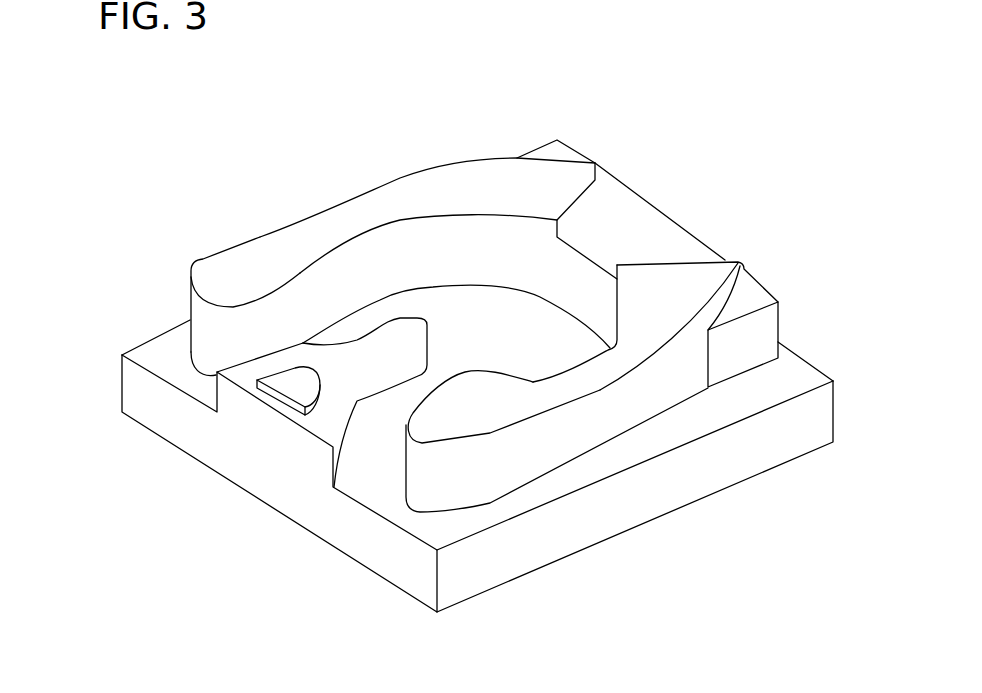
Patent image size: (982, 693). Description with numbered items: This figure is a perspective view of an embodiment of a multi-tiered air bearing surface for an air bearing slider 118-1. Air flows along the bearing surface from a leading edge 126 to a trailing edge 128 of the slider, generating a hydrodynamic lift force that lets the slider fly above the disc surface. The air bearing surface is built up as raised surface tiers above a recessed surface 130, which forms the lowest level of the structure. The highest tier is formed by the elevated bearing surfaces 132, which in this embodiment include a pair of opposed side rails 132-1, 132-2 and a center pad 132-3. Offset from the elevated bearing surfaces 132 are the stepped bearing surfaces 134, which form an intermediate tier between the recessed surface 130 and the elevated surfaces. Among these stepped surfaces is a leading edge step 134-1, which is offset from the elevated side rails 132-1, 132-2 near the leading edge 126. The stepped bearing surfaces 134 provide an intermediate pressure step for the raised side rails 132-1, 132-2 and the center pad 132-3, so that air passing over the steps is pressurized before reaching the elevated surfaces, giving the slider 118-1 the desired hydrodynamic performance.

The air bearing slider 118-1 is at (625, 148).
The leading edge 126 is at (783, 288).
The trailing edge 128 is at (350, 532).
The recessed surface 130 is at (530, 348).
The elevated bearing surfaces 132 is at (427, 180).
The side rail 132-1 is at (258, 262).
The side rail 132-2 is at (370, 333).
The center pad 132-3 is at (298, 382).
The stepped bearing surfaces 134 is at (635, 212).
The leading edge step 134-1 is at (657, 232).